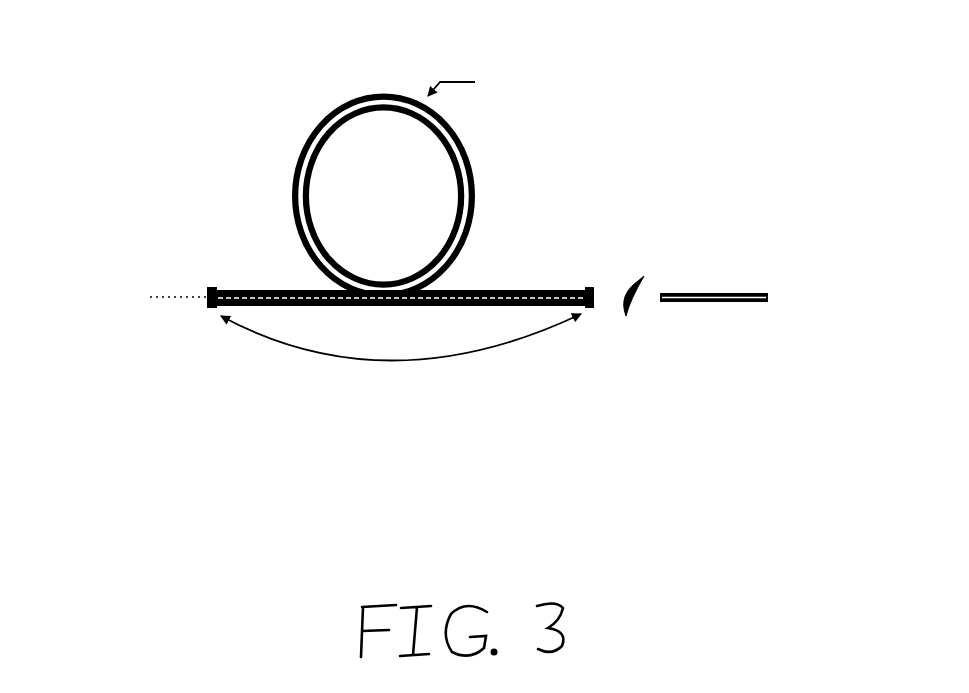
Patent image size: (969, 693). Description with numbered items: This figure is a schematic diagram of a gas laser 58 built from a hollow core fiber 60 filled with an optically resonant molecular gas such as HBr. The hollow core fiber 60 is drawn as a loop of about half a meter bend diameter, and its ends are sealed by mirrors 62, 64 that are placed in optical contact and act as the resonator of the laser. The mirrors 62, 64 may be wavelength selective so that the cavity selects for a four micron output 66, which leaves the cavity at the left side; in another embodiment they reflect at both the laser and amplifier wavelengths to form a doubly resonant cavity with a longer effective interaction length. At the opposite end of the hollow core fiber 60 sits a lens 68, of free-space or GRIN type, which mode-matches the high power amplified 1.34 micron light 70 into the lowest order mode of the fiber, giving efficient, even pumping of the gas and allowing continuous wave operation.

The gas laser 58 is at (378, 37).
The hollow core fiber 60 is at (476, 205).
The mirror 62 is at (212, 310).
The mirror 64 is at (593, 307).
The 4 micron output 66 is at (159, 290).
The lens 68 is at (634, 284).
The amplified 1.34 micron light 70 is at (709, 292).